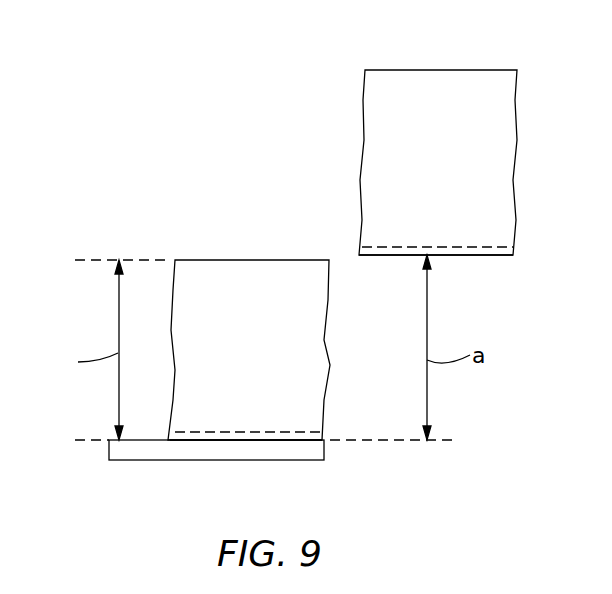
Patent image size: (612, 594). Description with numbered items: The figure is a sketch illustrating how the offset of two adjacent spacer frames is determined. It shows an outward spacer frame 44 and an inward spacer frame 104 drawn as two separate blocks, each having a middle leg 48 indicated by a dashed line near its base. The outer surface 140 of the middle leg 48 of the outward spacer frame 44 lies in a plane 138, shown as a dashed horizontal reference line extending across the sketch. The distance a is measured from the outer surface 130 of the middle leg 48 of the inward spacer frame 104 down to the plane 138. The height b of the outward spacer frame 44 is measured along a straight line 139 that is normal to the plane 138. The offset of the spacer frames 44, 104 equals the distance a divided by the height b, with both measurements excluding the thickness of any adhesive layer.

The inward spacer frame 104 is at (447, 70).
The outer surface 130 is at (483, 255).
The middle leg 48 is at (459, 247).
The outward spacer frame 44 is at (250, 260).
The plane 138 is at (150, 450).
The outer surface 140 is at (215, 440).
The straight line 139 is at (118, 300).